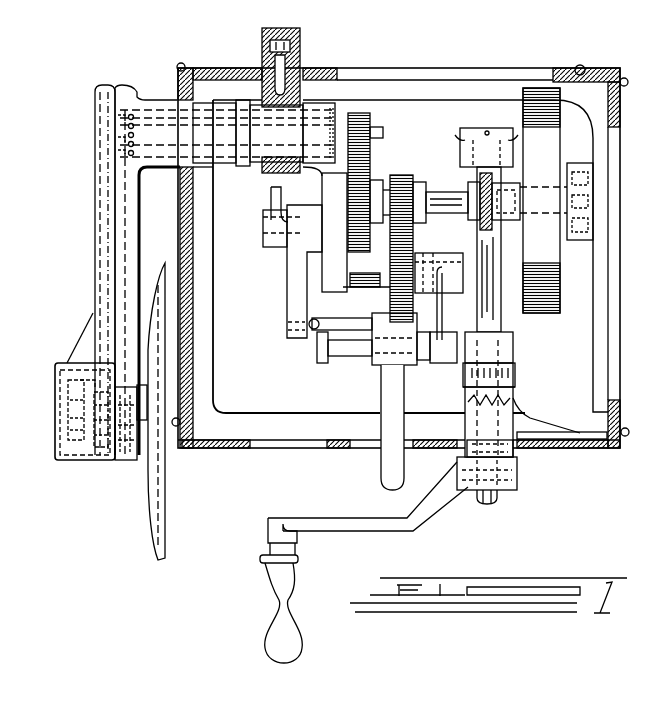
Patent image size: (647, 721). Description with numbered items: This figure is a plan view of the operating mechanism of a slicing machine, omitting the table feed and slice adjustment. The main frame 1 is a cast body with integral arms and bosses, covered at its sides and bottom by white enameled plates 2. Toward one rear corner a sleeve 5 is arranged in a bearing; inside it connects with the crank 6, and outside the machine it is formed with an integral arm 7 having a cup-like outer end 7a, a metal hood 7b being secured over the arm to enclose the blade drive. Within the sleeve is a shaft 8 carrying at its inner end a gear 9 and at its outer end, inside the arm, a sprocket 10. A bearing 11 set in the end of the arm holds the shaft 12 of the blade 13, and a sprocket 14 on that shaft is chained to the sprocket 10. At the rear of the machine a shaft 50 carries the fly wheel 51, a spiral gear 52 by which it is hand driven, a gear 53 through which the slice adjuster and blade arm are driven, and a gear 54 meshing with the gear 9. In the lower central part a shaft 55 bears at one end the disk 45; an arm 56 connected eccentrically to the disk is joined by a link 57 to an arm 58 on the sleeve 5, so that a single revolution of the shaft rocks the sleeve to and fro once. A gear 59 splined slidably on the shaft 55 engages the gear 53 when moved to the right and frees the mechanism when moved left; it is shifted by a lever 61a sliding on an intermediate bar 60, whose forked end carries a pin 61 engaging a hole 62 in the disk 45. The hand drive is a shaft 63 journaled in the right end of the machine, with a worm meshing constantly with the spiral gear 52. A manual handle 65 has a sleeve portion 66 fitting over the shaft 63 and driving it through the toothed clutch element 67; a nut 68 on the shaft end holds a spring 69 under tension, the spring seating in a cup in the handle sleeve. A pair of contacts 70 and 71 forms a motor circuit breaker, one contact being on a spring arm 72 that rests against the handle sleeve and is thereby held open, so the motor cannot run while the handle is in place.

The main frame 1 is at (307, 437).
The white enameled plates 2 is at (312, 449).
The sleeve 5 is at (257, 115).
The crank 6 is at (290, 28).
The integral arm 7 is at (141, 223).
The cup-like outer end 7a is at (135, 311).
The metal hood 7b is at (112, 252).
The shaft 8 is at (318, 68).
The gear 9 is at (363, 113).
The sprocket 10 is at (107, 80).
The bearing 11 is at (122, 462).
The shaft 12 is at (57, 388).
The blade 13 is at (165, 525).
The sprocket 14 is at (103, 435).
The disk 45 is at (287, 278).
The shaft 50 is at (440, 187).
The fly wheel 51 is at (560, 97).
The spiral gear 52 is at (490, 173).
The gear 53 is at (402, 175).
The gear 54 is at (350, 193).
The shaft 55 is at (366, 286).
The arm 56 is at (264, 240).
The link 57 is at (271, 198).
The arm 58 is at (298, 58).
The gear 59 is at (413, 305).
The intermediate bar 60 is at (345, 358).
The pin 61 is at (313, 330).
The lever 61a is at (379, 467).
The hole 62 is at (287, 330).
The shaft 63 is at (500, 313).
The manual handle 65 is at (444, 508).
The sleeve portion 66 is at (470, 208).
The toothed clutch element 67 is at (513, 396).
The nut 68 is at (497, 504).
The spring 69 is at (511, 497).
The contact 70 is at (545, 450).
The contact 71 is at (562, 426).
The spring arm 72 is at (543, 417).